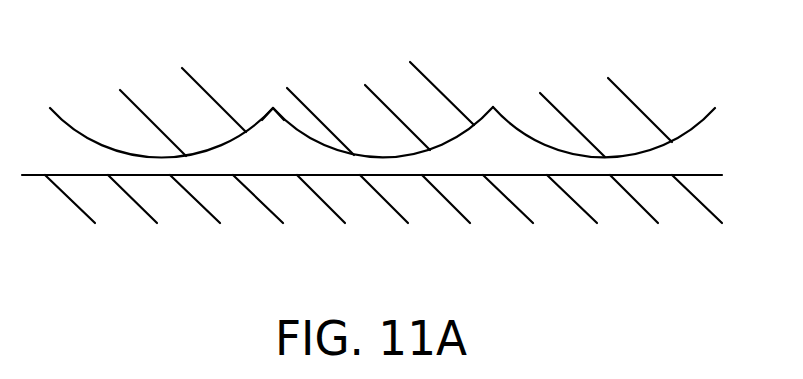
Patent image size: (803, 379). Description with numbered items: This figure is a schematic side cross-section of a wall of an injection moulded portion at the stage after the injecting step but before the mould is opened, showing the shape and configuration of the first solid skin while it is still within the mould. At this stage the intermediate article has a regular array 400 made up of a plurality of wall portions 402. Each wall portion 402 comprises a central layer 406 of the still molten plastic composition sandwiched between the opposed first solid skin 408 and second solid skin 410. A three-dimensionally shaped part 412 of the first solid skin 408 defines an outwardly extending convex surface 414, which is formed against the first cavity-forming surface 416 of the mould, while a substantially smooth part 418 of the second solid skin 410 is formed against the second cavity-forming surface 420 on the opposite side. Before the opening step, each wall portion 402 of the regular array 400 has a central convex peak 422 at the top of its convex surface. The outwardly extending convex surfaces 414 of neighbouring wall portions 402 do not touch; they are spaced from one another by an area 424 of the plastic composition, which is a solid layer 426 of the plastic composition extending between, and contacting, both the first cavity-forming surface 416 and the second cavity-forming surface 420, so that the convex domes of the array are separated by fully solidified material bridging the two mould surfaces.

The regular array 400 is at (67, 124).
The wall portion 402 is at (255, 125).
The central layer 406 is at (272, 137).
The first solid skin 408 is at (367, 156).
The second solid skin 410 is at (459, 175).
The three-dimensionally shaped part 412 is at (477, 123).
The outwardly extending convex surface 414 is at (507, 121).
The first cavity-forming surface 416 is at (698, 125).
The substantially smooth part 418 is at (265, 175).
The second cavity-forming surface 420 is at (382, 175).
The central convex peak 422 is at (493, 107).
The area of the plastic composition 424 is at (162, 157).
The solid layer 426 is at (608, 157).